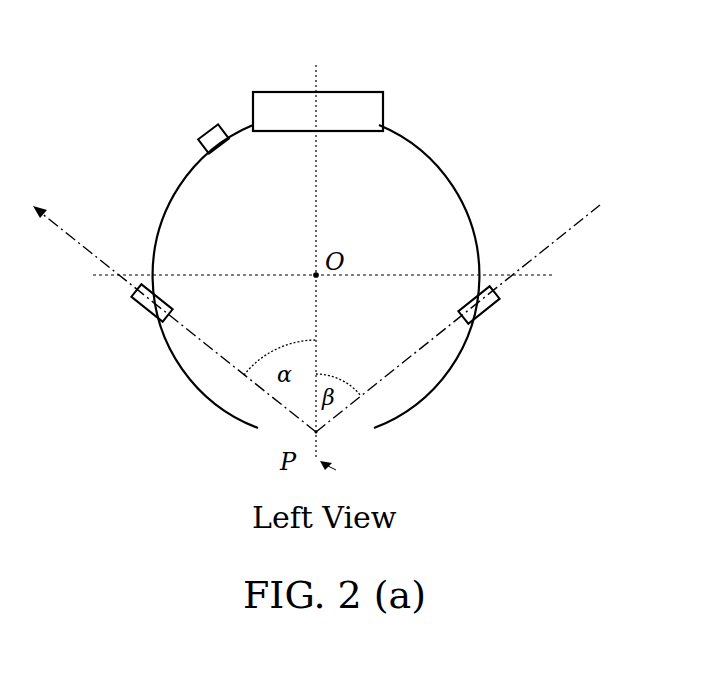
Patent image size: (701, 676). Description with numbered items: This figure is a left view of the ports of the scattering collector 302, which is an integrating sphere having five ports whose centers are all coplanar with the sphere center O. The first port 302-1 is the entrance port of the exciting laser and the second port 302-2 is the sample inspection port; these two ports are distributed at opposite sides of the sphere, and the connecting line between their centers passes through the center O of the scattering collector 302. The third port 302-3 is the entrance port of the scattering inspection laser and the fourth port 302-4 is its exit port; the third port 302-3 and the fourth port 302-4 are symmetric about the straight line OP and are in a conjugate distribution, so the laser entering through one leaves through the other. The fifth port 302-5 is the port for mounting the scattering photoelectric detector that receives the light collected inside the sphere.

The scattering collector 302 is at (428, 173).
The first port 302-1 is at (340, 103).
The second port 302-2 is at (325, 436).
The third port 302-3 is at (488, 293).
The fourth port 302-4 is at (135, 298).
The fifth port 302-5 is at (205, 134).